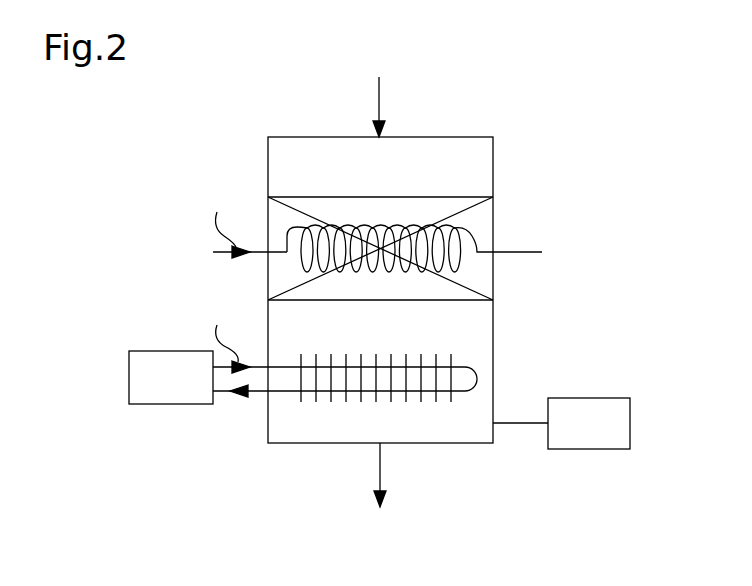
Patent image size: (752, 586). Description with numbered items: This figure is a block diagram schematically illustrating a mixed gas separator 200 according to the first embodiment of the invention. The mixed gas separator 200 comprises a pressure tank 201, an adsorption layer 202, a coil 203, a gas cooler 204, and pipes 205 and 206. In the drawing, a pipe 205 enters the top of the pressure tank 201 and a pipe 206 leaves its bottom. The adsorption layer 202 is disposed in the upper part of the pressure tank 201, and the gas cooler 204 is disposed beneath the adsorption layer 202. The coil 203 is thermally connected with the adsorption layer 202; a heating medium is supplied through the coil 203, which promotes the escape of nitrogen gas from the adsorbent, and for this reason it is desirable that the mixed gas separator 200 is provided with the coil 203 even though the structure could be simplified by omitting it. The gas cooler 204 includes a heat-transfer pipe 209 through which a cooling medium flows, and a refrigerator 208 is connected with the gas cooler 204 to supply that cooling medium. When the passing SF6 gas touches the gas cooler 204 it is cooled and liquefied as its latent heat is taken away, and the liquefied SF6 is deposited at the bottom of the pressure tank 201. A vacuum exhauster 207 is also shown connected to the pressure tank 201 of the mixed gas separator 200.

The mixed gas separator 200 is at (598, 172).
The pressure tank 201 is at (457, 137).
The adsorption layer 202 is at (483, 278).
The coil 203 is at (479, 237).
The gas cooler 204 is at (475, 367).
The pipe 205 is at (379, 105).
The pipe 206 is at (383, 472).
The vacuum exhauster 207 is at (572, 449).
The refrigerator 208 is at (153, 404).
The heat-transfer pipe 209 is at (300, 405).